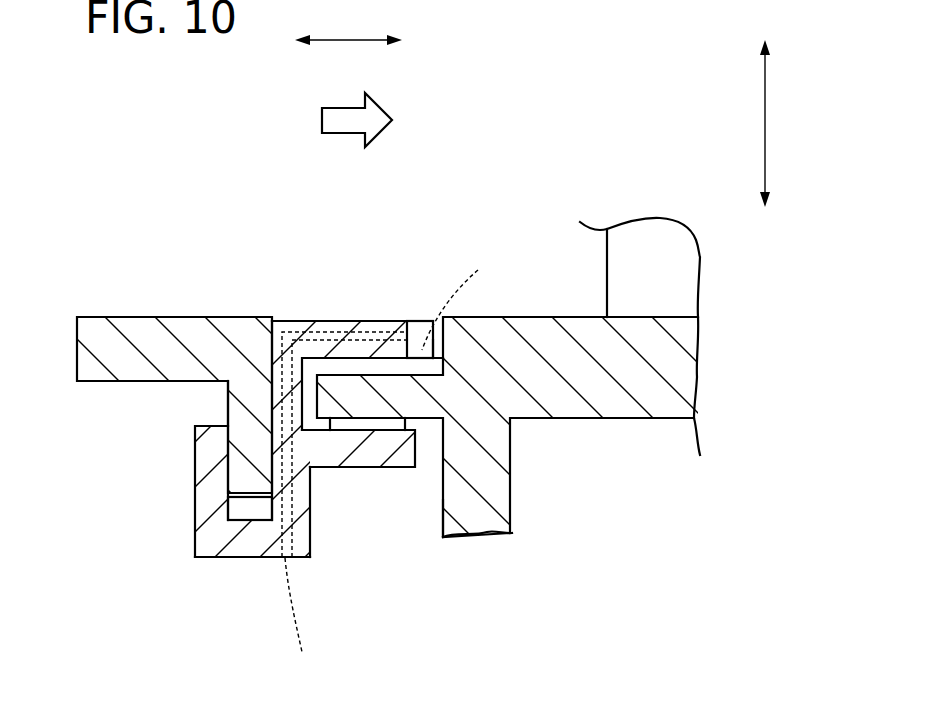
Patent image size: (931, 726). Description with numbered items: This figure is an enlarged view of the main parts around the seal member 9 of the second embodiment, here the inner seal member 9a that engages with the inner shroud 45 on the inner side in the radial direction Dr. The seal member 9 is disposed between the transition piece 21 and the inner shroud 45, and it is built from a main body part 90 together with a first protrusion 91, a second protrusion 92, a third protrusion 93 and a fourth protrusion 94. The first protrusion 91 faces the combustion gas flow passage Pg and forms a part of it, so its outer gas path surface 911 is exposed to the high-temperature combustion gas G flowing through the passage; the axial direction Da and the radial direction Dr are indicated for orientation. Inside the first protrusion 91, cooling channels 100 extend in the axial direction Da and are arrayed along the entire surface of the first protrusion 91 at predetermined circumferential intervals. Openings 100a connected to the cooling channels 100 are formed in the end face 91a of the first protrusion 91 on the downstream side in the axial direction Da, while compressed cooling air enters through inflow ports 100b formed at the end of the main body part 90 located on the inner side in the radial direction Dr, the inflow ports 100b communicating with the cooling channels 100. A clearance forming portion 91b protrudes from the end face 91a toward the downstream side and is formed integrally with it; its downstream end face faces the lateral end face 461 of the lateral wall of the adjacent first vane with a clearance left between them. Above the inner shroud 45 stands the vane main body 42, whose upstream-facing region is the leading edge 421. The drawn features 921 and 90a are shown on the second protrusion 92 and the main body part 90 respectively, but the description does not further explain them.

The transition piece 21 is at (132, 315).
The vane main body 42 is at (682, 270).
The leading edge 421 is at (603, 251).
The inner shroud 45 is at (677, 372).
The lateral end face 461 is at (442, 523).
The seal member 9 is at (353, 435).
The inner seal member 9a is at (387, 292).
The first protrusion 91 is at (297, 318).
The gas path surface 911 is at (365, 319).
The end face 91a is at (415, 319).
The clearance forming portion 91b is at (435, 348).
The second protrusion 92 is at (338, 462).
The protrusion of second seal portion 921 is at (367, 425).
The main body part 90 is at (303, 527).
The end of seal body 90a is at (268, 480).
The third protrusion 93 is at (218, 550).
The fourth protrusion 94 is at (195, 508).
The cooling channels 100 is at (334, 330).
The openings 100a is at (479, 294).
The inflow ports 100b is at (301, 624).
The combustion gas flow passage Pg is at (202, 235).
The combustion gas G is at (322, 122).
The axial direction Da is at (348, 22).
The radial direction Dr is at (778, 123).